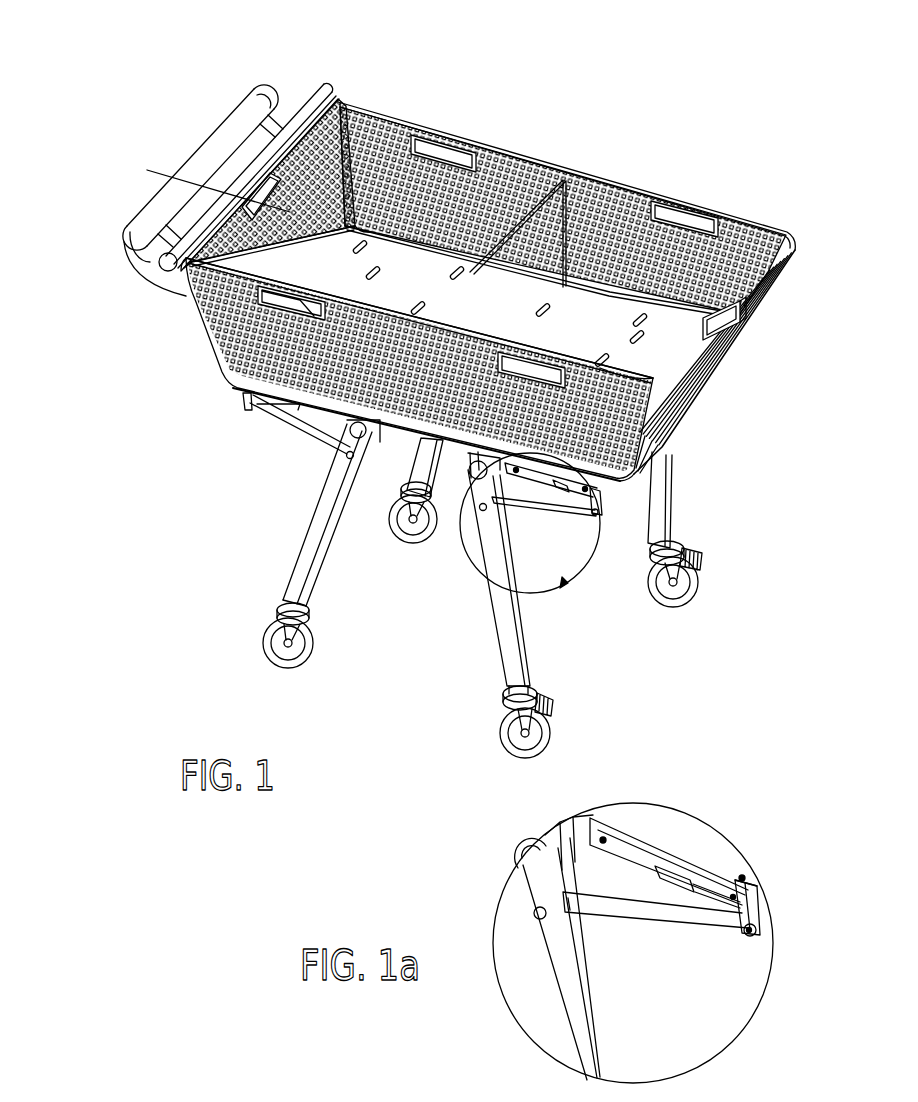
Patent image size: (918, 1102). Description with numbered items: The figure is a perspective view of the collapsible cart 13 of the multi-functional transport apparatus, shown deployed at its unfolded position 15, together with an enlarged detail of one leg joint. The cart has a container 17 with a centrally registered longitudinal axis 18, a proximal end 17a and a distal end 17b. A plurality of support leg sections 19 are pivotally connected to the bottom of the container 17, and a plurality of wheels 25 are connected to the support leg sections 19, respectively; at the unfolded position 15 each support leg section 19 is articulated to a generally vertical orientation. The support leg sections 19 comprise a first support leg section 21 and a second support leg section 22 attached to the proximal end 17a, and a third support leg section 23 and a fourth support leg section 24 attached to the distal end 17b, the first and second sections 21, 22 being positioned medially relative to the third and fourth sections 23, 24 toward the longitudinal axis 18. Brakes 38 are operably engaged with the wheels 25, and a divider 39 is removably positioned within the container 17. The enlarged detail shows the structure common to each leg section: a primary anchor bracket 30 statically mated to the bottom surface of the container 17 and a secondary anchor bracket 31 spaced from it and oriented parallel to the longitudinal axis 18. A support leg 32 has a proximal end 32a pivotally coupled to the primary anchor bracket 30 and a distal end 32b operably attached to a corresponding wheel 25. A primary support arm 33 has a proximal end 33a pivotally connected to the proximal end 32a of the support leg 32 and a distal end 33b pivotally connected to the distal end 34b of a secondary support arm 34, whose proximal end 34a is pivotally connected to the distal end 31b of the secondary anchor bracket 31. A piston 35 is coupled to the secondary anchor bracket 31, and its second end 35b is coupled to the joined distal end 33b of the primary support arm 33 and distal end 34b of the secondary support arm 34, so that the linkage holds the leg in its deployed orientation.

In FIG. 1, the collapsible cart 13 is at (721, 139).
In FIG. 1, the unfolded position 15 is at (417, 96).
In FIG. 1, the container 17 is at (590, 172).
In FIG. 1, the proximal end of the container 17a is at (200, 333).
In FIG. 1, the distal end of the container 17b is at (703, 395).
In FIG. 1, the centrally registered longitudinal axis 18 is at (693, 328).
In FIG. 1, the support leg sections 19 is at (372, 523).
In FIG. 1, the first support leg section 21 is at (311, 455).
In FIG. 1, the second support leg section 22 is at (420, 448).
In FIG. 1, the third support leg section 23 is at (524, 617).
In FIG. 1, the fourth support leg section 24 is at (677, 490).
In FIG. 1, the wheels 25 is at (437, 536).
In FIG. 1, the brakes 38 is at (400, 500).
In FIG. 1, the divider 39 is at (507, 308).
In FIG. 1, the distal end of the support leg 32b is at (507, 688).
In FIG. 1a, the primary anchor bracket 30 is at (567, 832).
In FIG. 1a, the secondary anchor bracket 31 is at (658, 845).
In FIG. 1a, the distal end of the secondary anchor bracket 31b is at (746, 880).
In FIG. 1a, the support leg 32 is at (550, 1002).
In FIG. 1a, the proximal end of the support leg 32a is at (519, 866).
In FIG. 1a, the primary support arm 33 is at (668, 922).
In FIG. 1a, the proximal end of the primary support arm 33a is at (570, 913).
In FIG. 1a, the distal end of the primary support arm 33b is at (753, 935).
In FIG. 1a, the secondary support arm 34 is at (765, 900).
In FIG. 1a, the proximal end of the secondary support arm 34a is at (757, 895).
In FIG. 1a, the distal end of the secondary support arm 34b is at (766, 926).
In FIG. 1a, the piston 35 is at (676, 876).
In FIG. 1a, the second end of the piston 35b is at (732, 896).